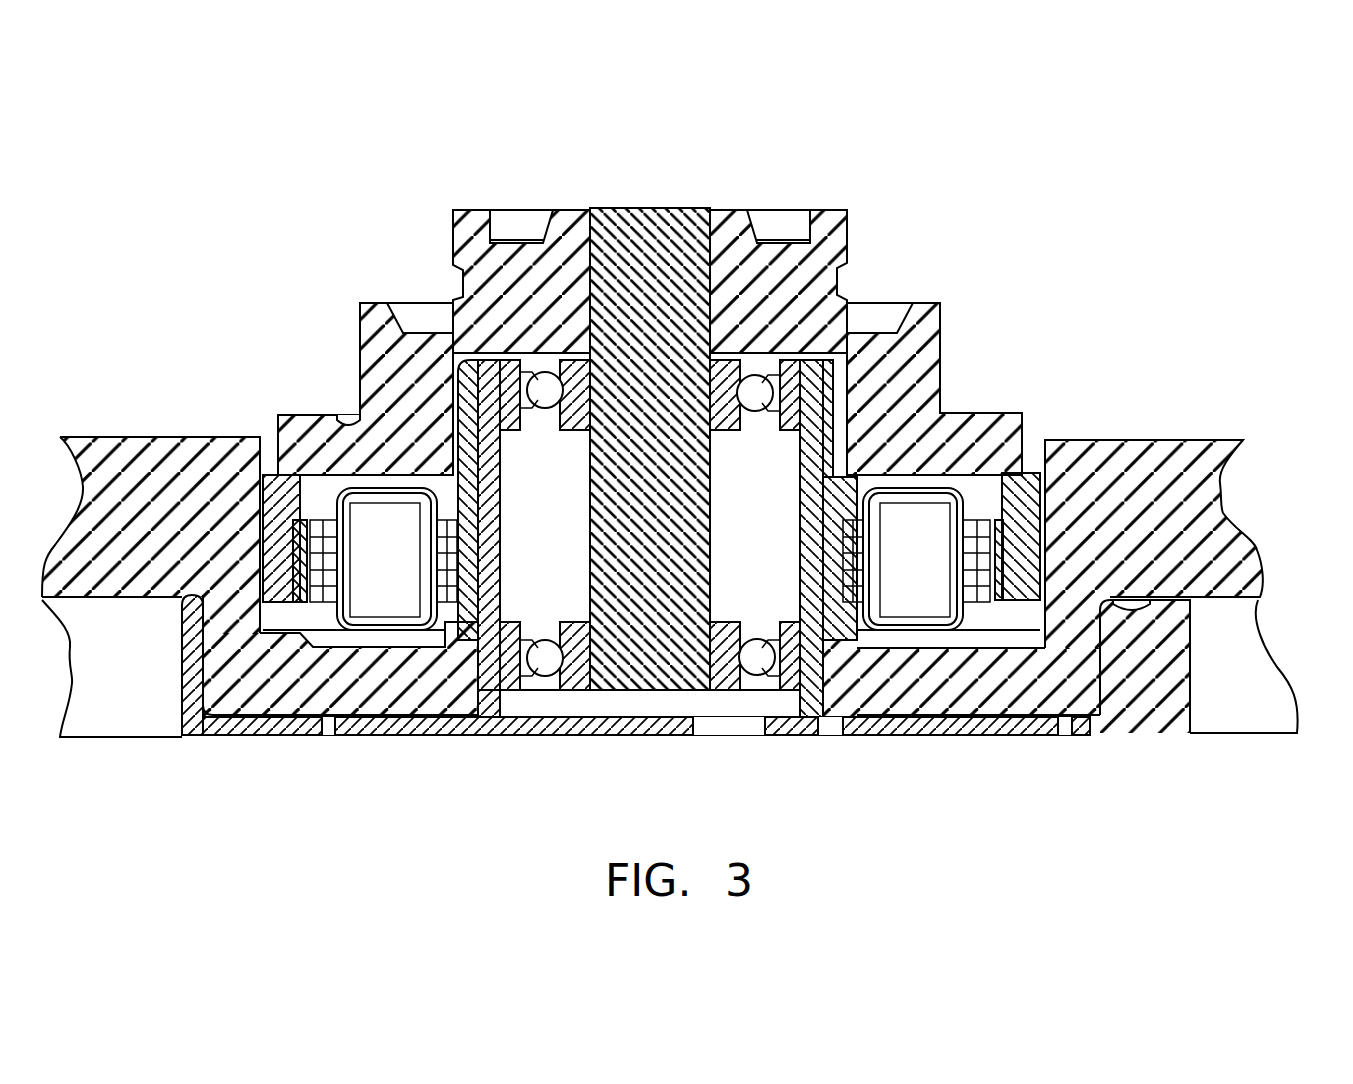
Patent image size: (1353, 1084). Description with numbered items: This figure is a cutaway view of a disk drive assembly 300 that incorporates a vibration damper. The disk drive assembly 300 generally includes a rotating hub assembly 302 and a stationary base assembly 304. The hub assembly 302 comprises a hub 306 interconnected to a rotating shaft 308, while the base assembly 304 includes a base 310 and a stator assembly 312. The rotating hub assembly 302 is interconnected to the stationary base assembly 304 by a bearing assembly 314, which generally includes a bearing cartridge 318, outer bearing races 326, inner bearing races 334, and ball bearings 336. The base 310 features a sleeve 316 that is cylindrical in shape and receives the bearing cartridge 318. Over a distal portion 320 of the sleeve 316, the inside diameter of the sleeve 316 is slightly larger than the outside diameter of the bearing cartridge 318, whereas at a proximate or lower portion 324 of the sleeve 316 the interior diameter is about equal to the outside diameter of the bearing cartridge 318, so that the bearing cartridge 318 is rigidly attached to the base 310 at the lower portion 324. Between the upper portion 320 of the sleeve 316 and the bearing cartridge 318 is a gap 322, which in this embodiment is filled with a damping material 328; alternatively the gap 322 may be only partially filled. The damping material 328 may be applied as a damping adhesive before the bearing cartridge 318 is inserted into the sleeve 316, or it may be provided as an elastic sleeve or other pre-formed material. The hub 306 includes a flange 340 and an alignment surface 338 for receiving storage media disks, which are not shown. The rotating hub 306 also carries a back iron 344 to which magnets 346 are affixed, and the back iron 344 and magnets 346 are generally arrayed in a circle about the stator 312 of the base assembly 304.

The disk drive assembly 300 is at (648, 120).
The hub assembly 302 is at (990, 205).
The base assembly 304 is at (942, 795).
The hub 306 is at (827, 212).
The rotating shaft 308 is at (618, 212).
The base 310 is at (1195, 503).
The stator assembly 312 is at (378, 674).
The bearing assembly 314 is at (538, 700).
The sleeve 316 is at (470, 458).
The bearing cartridge 318 is at (488, 702).
The distal portion 320 is at (837, 395).
The gap 322 is at (830, 420).
The lower portion 324 is at (823, 683).
The outer bearing races 326 is at (795, 690).
The damping material 328 is at (466, 428).
The inner bearing races 334 is at (590, 692).
The ball bearings 336 is at (758, 667).
The alignment surface 338 is at (358, 310).
The flange 340 is at (278, 417).
The back iron 344 is at (1023, 607).
The magnets 346 is at (1003, 613).